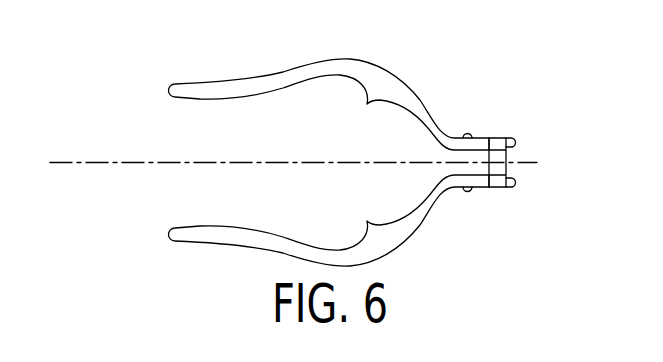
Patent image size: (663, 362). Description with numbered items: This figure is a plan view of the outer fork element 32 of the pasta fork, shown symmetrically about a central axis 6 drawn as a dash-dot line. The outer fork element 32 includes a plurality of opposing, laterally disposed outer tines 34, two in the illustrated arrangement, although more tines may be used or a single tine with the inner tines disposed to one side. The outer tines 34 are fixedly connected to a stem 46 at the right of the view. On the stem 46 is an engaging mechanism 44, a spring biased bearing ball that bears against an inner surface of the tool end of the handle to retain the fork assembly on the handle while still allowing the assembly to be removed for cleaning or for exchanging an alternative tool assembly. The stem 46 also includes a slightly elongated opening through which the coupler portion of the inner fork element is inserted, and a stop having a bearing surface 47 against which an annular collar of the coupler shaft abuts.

The longitudinal axis 6 is at (70, 157).
The outer fork element 32 is at (361, 133).
The outer tines 34 is at (226, 82).
The engaging mechanism 44 is at (468, 132).
The stem 46 is at (483, 189).
The bearing surface 47 is at (507, 149).